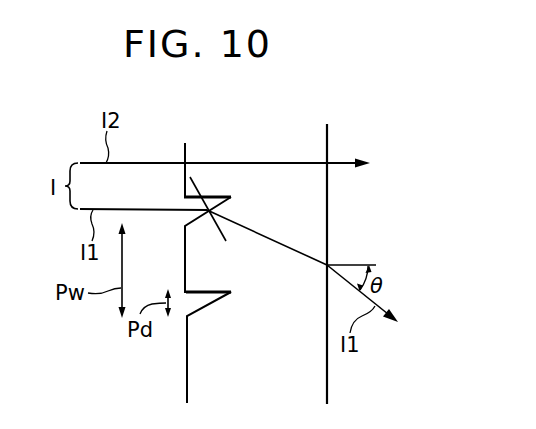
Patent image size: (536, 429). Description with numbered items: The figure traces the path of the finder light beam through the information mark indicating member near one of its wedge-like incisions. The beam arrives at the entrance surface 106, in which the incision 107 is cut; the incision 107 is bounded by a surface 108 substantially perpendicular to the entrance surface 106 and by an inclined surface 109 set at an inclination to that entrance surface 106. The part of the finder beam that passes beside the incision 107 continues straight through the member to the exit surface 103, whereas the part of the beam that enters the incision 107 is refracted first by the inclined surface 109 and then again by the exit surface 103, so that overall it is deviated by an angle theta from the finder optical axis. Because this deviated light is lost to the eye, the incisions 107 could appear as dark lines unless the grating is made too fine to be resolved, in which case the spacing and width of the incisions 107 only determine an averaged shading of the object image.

The exit surface 103 is at (327, 389).
The entrance surface 106 is at (185, 180).
The wedge-like incision 107 is at (200, 200).
The surface 108 is at (216, 197).
The inclined surface 109 is at (237, 210).